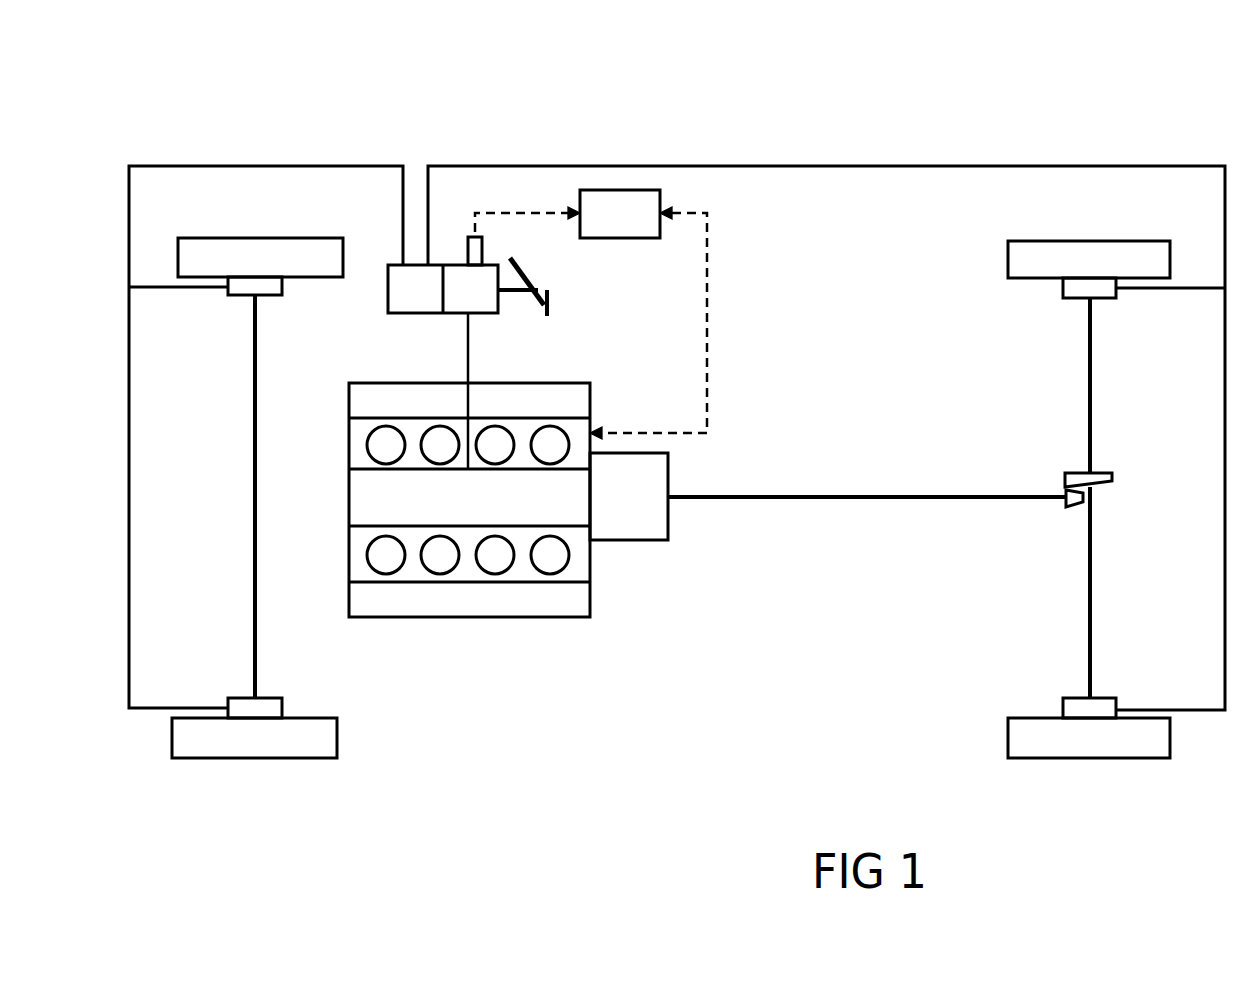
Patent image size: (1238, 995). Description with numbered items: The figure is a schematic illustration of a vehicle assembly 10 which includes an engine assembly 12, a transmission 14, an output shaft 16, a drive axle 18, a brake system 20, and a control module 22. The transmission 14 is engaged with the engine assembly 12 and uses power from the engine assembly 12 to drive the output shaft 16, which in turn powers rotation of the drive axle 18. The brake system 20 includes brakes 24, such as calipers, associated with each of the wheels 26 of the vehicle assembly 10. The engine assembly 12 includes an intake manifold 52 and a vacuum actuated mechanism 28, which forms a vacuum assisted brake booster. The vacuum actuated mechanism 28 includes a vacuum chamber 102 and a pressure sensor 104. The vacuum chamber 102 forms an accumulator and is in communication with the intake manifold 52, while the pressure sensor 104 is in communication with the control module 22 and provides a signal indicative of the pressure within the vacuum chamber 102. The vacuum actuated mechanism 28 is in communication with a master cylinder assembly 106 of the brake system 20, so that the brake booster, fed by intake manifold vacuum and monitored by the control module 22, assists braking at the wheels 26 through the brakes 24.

The vehicle assembly 10 is at (130, 136).
The engine assembly 12 is at (520, 522).
The transmission 14 is at (623, 513).
The output shaft 16 is at (858, 497).
The drive axle 18 is at (1091, 400).
The brake system 20 is at (422, 340).
The control module 22 is at (613, 227).
The brakes 24 is at (238, 296).
The wheels 26 is at (265, 238).
The vacuum actuated mechanism 28 is at (515, 316).
The intake manifold 52 is at (461, 506).
The vacuum chamber 102 is at (465, 290).
The pressure sensor 104 is at (483, 251).
The master cylinder assembly 106 is at (396, 314).